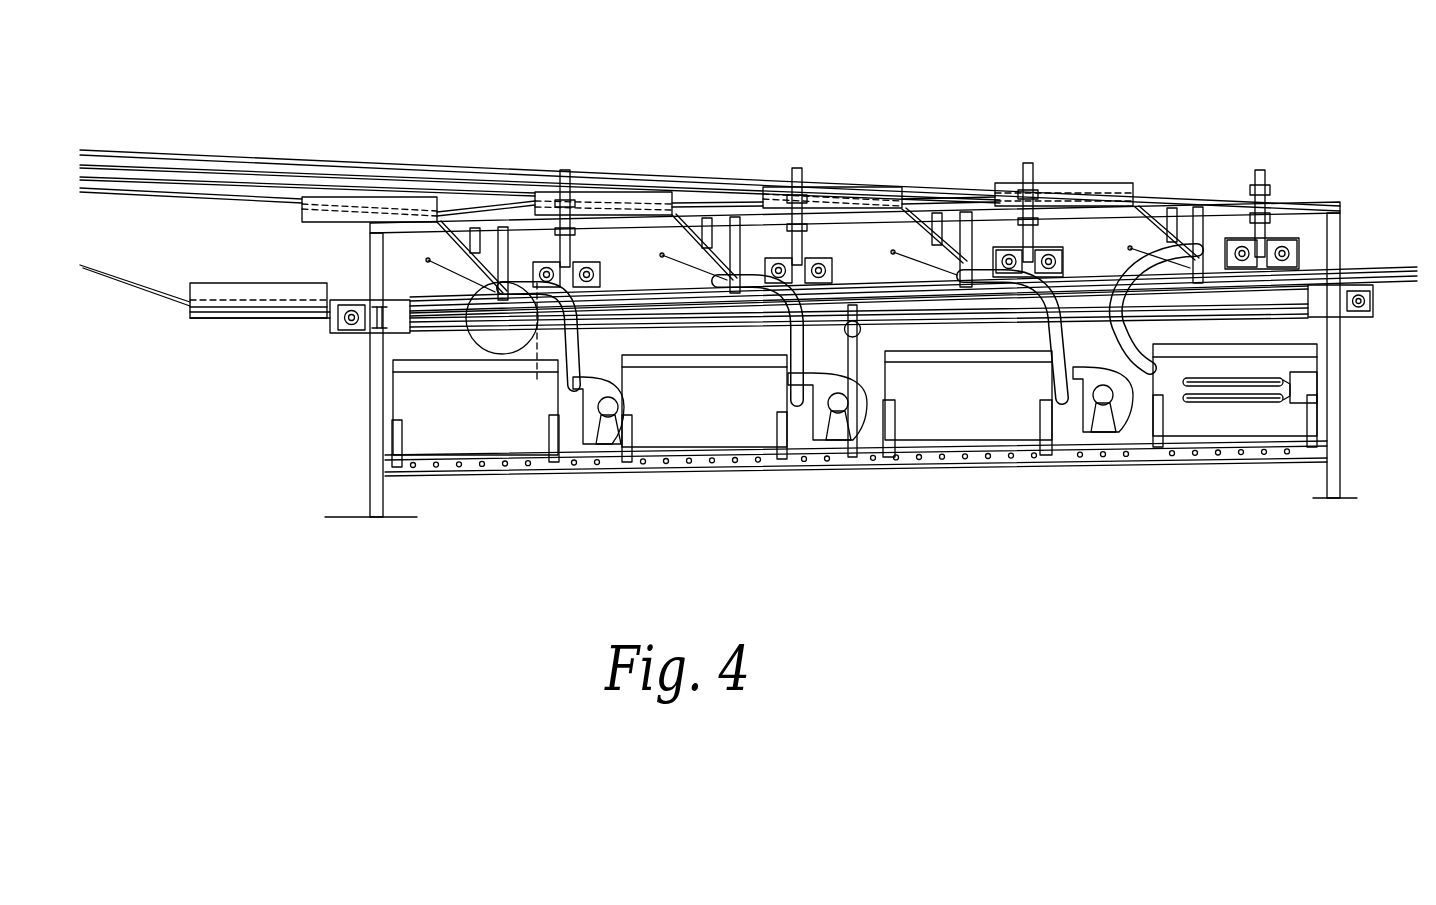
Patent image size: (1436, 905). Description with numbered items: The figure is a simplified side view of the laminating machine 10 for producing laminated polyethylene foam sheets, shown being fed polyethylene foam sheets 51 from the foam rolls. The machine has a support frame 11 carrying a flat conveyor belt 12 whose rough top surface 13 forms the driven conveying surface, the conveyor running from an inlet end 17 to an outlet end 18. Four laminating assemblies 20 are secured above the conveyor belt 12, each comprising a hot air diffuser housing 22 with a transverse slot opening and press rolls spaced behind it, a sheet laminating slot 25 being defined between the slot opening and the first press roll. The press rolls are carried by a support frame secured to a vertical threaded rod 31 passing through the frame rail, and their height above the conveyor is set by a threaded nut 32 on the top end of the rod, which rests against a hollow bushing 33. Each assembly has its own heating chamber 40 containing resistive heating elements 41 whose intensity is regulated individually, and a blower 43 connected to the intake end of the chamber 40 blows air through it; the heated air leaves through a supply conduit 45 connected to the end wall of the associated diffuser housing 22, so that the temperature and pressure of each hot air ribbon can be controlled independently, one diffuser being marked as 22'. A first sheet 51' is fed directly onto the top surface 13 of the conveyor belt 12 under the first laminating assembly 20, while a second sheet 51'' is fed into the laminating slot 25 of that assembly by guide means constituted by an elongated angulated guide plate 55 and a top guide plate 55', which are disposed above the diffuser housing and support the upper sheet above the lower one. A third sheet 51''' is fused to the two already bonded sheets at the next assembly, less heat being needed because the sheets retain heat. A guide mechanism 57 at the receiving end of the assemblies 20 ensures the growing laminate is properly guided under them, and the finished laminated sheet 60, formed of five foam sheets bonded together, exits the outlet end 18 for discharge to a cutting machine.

The laminating machine 10 is at (756, 158).
The support frame 11 is at (378, 435).
The conveyor belt 12 is at (637, 280).
The top surface 13 is at (412, 318).
The inlet end 17 is at (318, 318).
The outlet end 18 is at (1363, 310).
The laminating assembly 20 is at (602, 238).
The hot air diffuser housing 22 is at (884, 325).
The hose coupling 22' is at (502, 322).
The sheet laminating slot 25 is at (531, 345).
The vertical threaded rod 31 is at (1022, 170).
The threaded nut 32 is at (1035, 190).
The hollow bushing 33 is at (1043, 200).
The heating chamber 40 is at (478, 420).
The resistive heating elements 41 is at (1233, 395).
The blower 43 is at (580, 420).
The supply conduit 45 is at (797, 337).
The polyethylene foam sheets 51 is at (710, 145).
The first sheet 51' is at (135, 332).
The second sheet 51'' is at (307, 216).
The third sheet 51''' is at (540, 146).
The guide plate 55 is at (818, 207).
The feed bracket 55' is at (258, 349).
The guide mechanism 57 is at (445, 275).
The laminated sheet 60 is at (1355, 268).